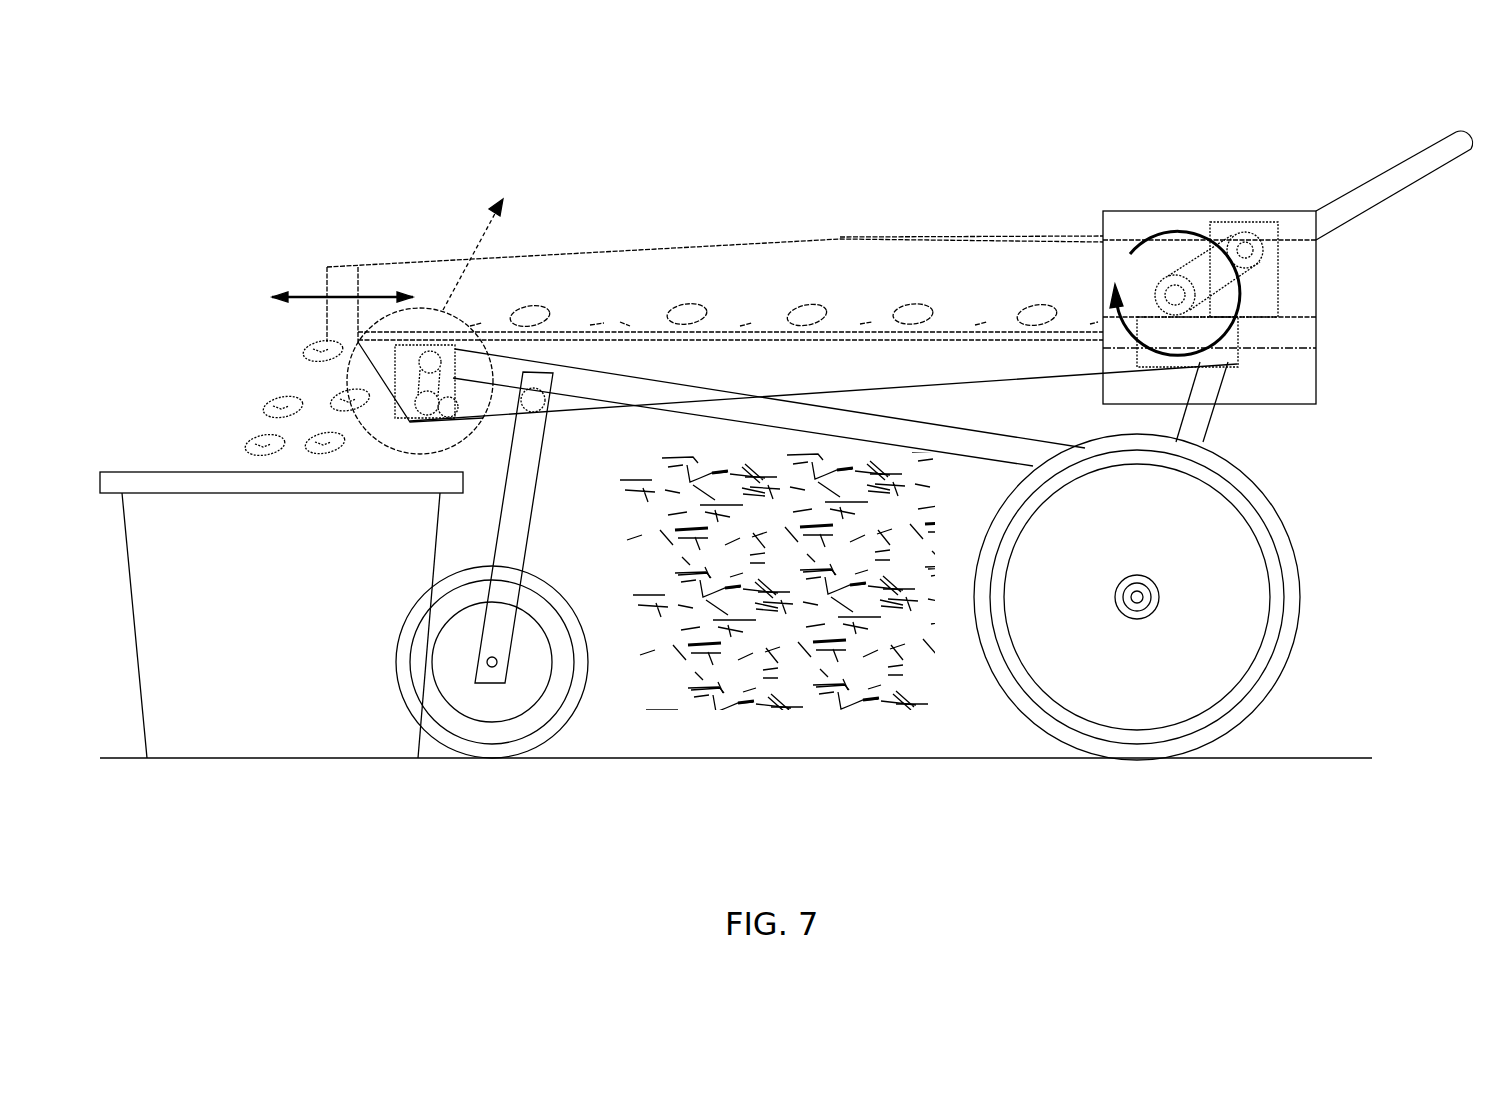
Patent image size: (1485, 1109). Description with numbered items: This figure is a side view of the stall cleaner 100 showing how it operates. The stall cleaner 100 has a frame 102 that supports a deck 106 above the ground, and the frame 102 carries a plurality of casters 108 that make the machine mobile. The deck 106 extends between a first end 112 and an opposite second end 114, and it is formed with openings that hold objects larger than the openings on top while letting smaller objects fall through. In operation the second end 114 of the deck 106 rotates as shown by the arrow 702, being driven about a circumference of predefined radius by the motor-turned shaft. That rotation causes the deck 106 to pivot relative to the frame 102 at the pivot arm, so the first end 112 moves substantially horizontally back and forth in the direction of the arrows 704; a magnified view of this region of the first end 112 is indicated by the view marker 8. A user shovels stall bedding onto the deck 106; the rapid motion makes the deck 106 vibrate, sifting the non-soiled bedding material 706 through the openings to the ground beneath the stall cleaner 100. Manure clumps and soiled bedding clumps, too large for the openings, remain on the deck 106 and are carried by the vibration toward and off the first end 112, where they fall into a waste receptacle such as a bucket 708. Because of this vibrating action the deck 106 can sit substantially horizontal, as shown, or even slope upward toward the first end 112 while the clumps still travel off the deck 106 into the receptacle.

The stall cleaner 100 is at (328, 108).
The frame 102 is at (693, 415).
The deck 106 is at (770, 333).
The casters 108 is at (1300, 620).
The first end 112 is at (332, 332).
The second end 114 is at (1086, 214).
The arrow 702 is at (1173, 230).
The arrows 704 is at (316, 292).
The non-soiled bedding material 706 is at (942, 686).
The bucket 708 is at (300, 637).
The direction of travel 8 is at (478, 239).